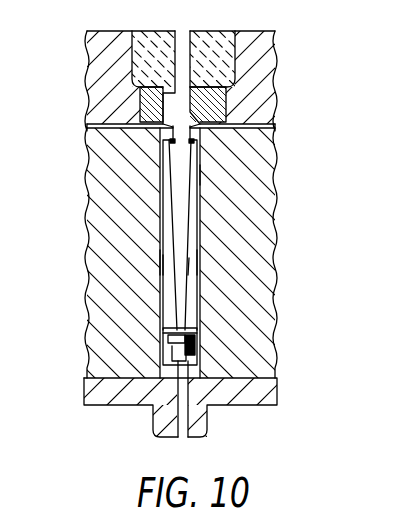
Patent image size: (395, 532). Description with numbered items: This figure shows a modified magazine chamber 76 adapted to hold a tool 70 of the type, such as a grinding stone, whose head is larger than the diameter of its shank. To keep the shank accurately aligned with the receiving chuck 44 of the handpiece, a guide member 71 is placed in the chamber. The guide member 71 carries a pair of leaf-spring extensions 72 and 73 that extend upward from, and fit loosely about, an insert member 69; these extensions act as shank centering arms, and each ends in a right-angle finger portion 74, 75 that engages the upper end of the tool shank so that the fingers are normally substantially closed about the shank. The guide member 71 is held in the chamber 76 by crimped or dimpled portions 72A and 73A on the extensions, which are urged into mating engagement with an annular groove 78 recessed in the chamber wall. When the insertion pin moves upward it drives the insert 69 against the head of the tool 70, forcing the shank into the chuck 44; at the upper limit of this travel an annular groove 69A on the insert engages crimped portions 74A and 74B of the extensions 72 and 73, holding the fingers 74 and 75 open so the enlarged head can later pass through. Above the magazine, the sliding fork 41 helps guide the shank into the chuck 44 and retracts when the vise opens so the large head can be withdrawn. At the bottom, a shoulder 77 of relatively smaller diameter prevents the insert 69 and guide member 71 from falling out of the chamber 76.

The tool shank positioning and chuck holding fork 41 is at (137, 103).
The tool chuck 44 is at (190, 38).
The right-angle finger portion 75 is at (276, 135).
The right-angle finger portion 74 is at (87, 131).
The crimped portion 74A is at (160, 157).
The crimped portion 74B is at (200, 152).
The guide member 71 is at (200, 175).
The annular groove 78 is at (160, 262).
The leaf-spring extension 72 is at (160, 234).
The crimped or dimpled portion 72A is at (160, 263).
The magazine chamber 76 is at (190, 303).
The leaf-spring extension 73 is at (200, 265).
The crimped or dimpled portion 73A is at (200, 267).
The tool 70 is at (197, 330).
The annular groove 69A is at (165, 342).
The insert member 69 is at (197, 345).
The shoulder 77 is at (188, 370).